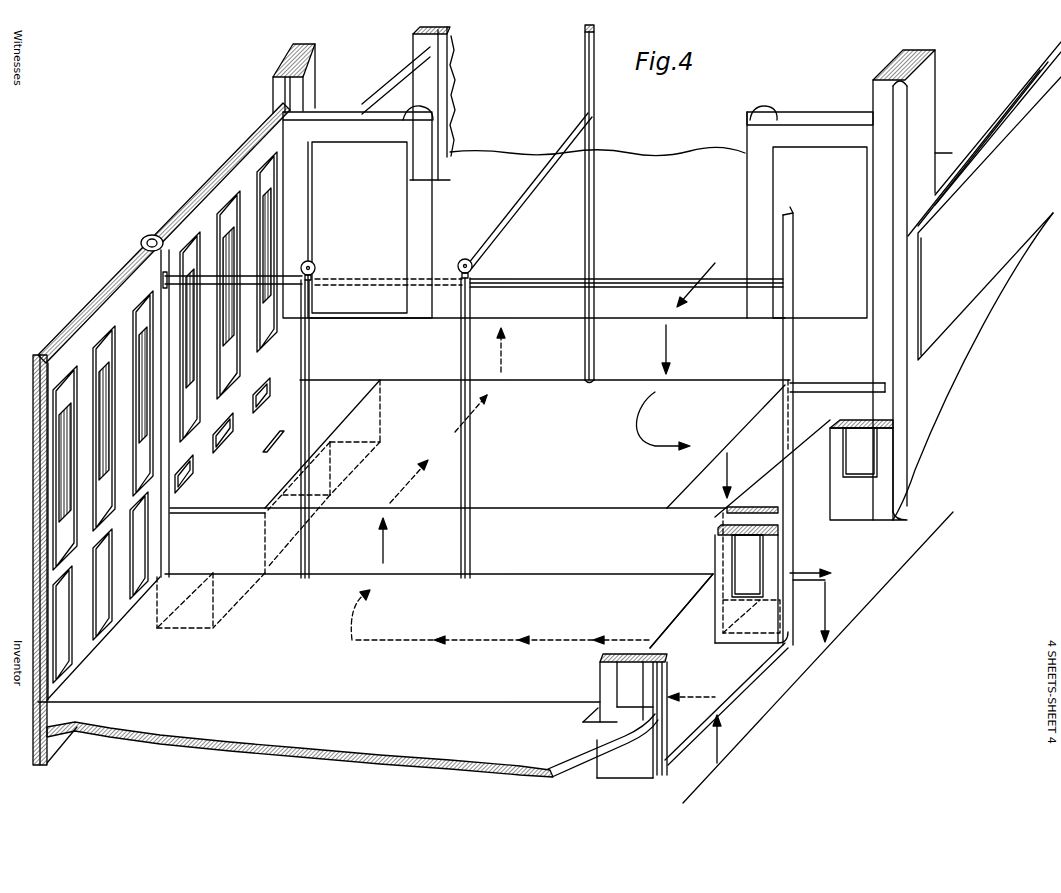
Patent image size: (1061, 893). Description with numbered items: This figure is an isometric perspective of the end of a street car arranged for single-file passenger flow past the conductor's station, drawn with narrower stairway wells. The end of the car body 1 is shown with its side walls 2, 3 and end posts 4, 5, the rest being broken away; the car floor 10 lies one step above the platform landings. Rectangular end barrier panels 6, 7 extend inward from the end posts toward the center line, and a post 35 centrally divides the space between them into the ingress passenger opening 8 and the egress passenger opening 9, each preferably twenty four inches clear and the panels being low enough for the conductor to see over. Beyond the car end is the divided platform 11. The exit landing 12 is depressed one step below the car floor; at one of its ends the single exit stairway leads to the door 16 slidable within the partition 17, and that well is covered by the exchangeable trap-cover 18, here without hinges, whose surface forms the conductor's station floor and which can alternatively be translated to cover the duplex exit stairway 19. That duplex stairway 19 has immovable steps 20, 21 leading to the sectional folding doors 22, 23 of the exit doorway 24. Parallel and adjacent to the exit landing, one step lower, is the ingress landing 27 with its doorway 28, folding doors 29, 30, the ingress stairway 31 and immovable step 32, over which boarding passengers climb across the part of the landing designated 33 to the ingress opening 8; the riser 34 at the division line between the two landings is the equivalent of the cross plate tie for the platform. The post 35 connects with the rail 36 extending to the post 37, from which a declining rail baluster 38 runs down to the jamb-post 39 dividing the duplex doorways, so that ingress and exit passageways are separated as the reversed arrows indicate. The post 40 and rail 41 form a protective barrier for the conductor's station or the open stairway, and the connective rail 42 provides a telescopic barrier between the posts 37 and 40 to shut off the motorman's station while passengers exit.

The end of the car body 1 is at (915, 390).
The side wall 2 is at (412, 73).
The side wall 3 is at (1008, 218).
The end post 4 is at (273, 68).
The end post 5 is at (917, 103).
The end barrier panel 6 is at (351, 197).
The end barrier panel 7 is at (817, 230).
The ingress passenger opening 8 is at (545, 336).
The egress passenger opening 9 is at (688, 318).
The floor of the car body 10 is at (657, 167).
The divided platform 11 is at (317, 747).
The exit landing 12 is at (475, 516).
The door 16 is at (238, 172).
The partition 17 is at (106, 320).
The trap-cover 18 is at (268, 504).
The stairway 19 is at (807, 544).
The immovable step 20 is at (751, 560).
The immovable step 21 is at (810, 565).
The sectional folding door 22 is at (880, 432).
The sectional folding door 23 is at (777, 510).
The exit doorway 24 is at (832, 595).
The ingress landing 27 is at (500, 620).
The doorway 28 is at (727, 697).
The sectional folding door 29 is at (768, 622).
The sectional folding door 30 is at (660, 728).
The stairway 31 is at (682, 648).
The immovable step 32 is at (649, 716).
The part of the landing 33 is at (409, 479).
The riser 34 is at (386, 540).
The post 35 is at (589, 160).
The rail 36 is at (547, 172).
The post 37 is at (465, 433).
The declining rail baluster 38 is at (653, 283).
The jamb-post 39 is at (793, 354).
The post 40 is at (308, 373).
The rail 41 is at (243, 278).
The connective rail 42 is at (320, 280).